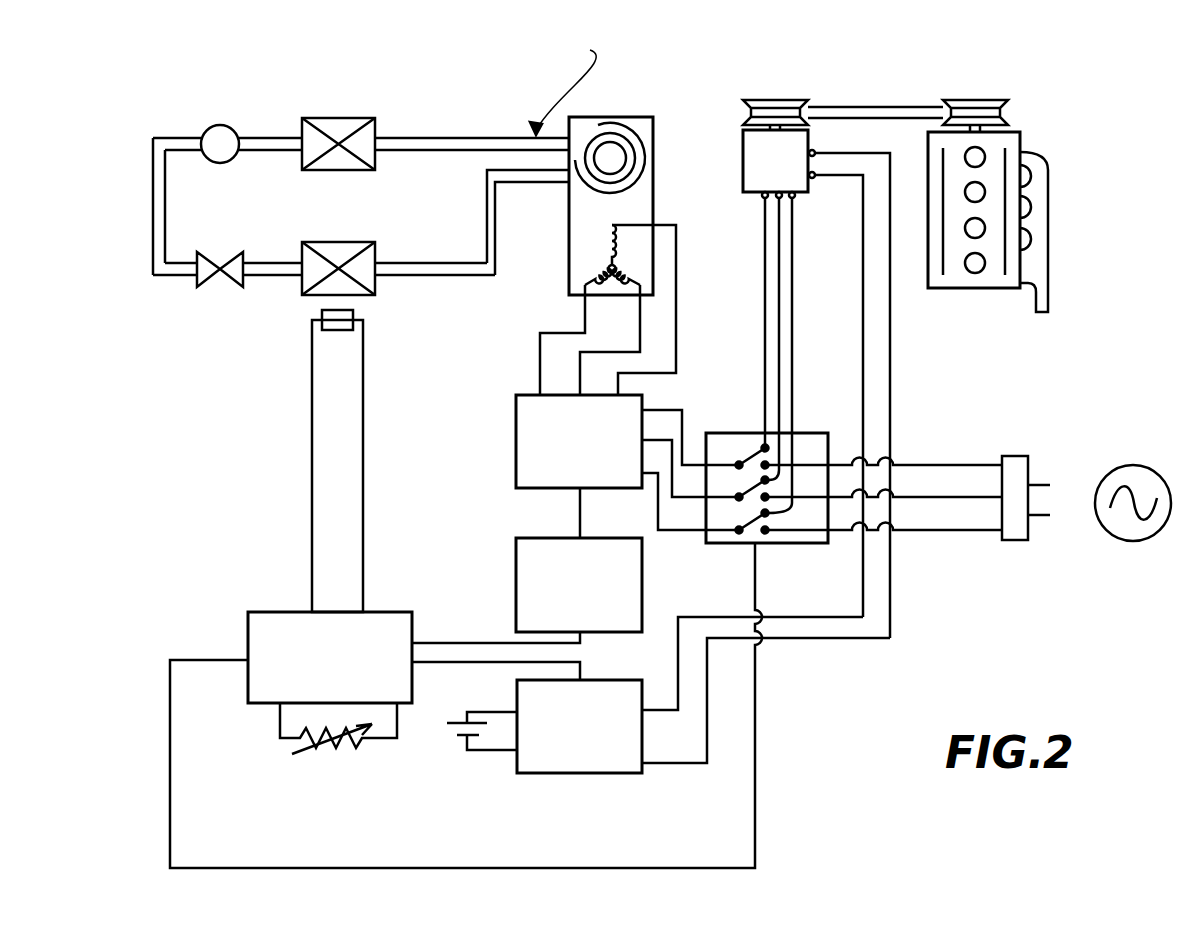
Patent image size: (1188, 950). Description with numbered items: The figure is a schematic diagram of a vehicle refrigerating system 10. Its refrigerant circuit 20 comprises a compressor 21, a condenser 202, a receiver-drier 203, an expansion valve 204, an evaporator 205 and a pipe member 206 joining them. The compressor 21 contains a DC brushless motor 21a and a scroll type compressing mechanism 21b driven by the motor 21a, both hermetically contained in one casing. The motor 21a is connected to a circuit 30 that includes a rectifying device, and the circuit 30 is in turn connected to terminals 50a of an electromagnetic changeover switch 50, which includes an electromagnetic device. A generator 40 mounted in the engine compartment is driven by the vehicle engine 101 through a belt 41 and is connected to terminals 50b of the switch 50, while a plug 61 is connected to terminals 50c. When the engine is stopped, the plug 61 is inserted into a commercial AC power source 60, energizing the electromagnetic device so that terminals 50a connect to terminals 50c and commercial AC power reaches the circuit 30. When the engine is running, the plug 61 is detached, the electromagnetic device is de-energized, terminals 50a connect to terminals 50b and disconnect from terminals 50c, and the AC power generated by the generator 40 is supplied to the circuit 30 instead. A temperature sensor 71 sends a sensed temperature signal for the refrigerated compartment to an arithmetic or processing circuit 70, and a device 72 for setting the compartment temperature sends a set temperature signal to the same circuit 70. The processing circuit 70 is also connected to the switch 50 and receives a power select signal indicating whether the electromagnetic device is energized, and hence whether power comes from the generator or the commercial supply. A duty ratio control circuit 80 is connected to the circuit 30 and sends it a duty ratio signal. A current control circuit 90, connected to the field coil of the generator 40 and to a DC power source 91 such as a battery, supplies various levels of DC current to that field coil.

The refrigerating system 10 is at (563, 87).
The refrigerant circuit 20 is at (458, 137).
The compressor 21 is at (612, 167).
The DC brushless motor 21a is at (632, 272).
The scroll type compressing mechanism 21b is at (594, 188).
The circuit 30 is at (516, 442).
The generator 40 is at (743, 148).
The belt 41 is at (900, 107).
The electromagnetic changeover switch 50 is at (772, 494).
The terminals 50a is at (738, 522).
The terminals 50b is at (752, 458).
The terminals 50c is at (772, 534).
The commercial AC power source 60 is at (1150, 541).
The plug 61 is at (1030, 542).
The arithmetic or processing circuit 70 is at (278, 612).
The temperature sensor 71 is at (322, 312).
The temperature setting device 72 is at (347, 745).
The duty ratio control circuit 80 is at (516, 565).
The current control circuit 90 is at (632, 774).
The DC power source 91 is at (464, 738).
The vehicle engine 101 is at (1022, 146).
The condenser 202 is at (344, 118).
The receiver-drier 203 is at (222, 125).
The expansion valve 204 is at (228, 287).
The evaporator 205 is at (377, 295).
The pipe member 206 is at (490, 277).